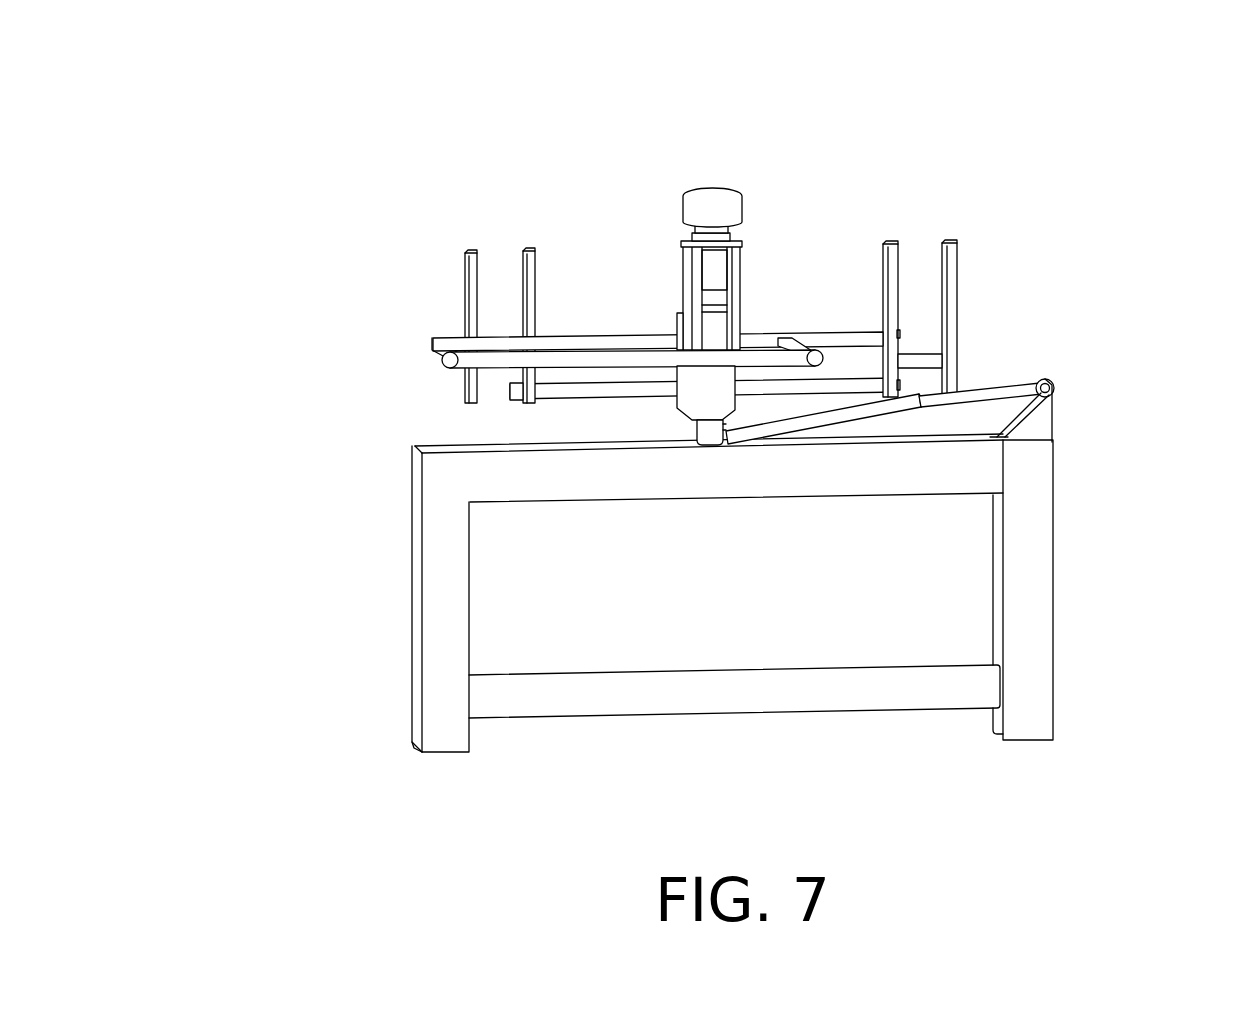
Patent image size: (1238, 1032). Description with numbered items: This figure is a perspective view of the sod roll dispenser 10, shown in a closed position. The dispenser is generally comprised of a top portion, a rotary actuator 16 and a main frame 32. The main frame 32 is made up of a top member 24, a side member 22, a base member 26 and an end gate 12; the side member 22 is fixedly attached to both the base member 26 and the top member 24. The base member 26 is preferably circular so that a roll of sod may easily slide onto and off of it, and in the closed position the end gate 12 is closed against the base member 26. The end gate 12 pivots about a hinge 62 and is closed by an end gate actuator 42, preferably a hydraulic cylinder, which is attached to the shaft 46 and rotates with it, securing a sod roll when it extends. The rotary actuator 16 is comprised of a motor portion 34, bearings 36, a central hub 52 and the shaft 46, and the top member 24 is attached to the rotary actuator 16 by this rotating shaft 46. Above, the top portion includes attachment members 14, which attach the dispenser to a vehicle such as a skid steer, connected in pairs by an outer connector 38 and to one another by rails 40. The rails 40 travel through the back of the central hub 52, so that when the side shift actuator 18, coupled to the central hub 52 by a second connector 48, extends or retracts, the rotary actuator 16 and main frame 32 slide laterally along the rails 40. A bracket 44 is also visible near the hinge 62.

The sod roll dispenser 10 is at (746, 242).
The end gate 12 is at (1030, 588).
The attachment members 14 is at (893, 257).
The rotary actuator 16 is at (761, 194).
The side shift actuator 18 is at (595, 358).
The side member 22 is at (442, 612).
The top member 24 is at (562, 478).
The base member 26 is at (840, 692).
The main frame 32 is at (722, 592).
The motor portion 34 is at (707, 212).
The bearings 36 is at (733, 282).
The outer connectors 38 is at (917, 363).
The rails 40 is at (652, 388).
The end gate actuator 42 is at (883, 412).
The support bracket 44 is at (1033, 428).
The shaft 46 is at (705, 432).
The second connector 48 is at (820, 352).
The central hub 52 is at (715, 375).
The hinge 62 is at (1053, 398).